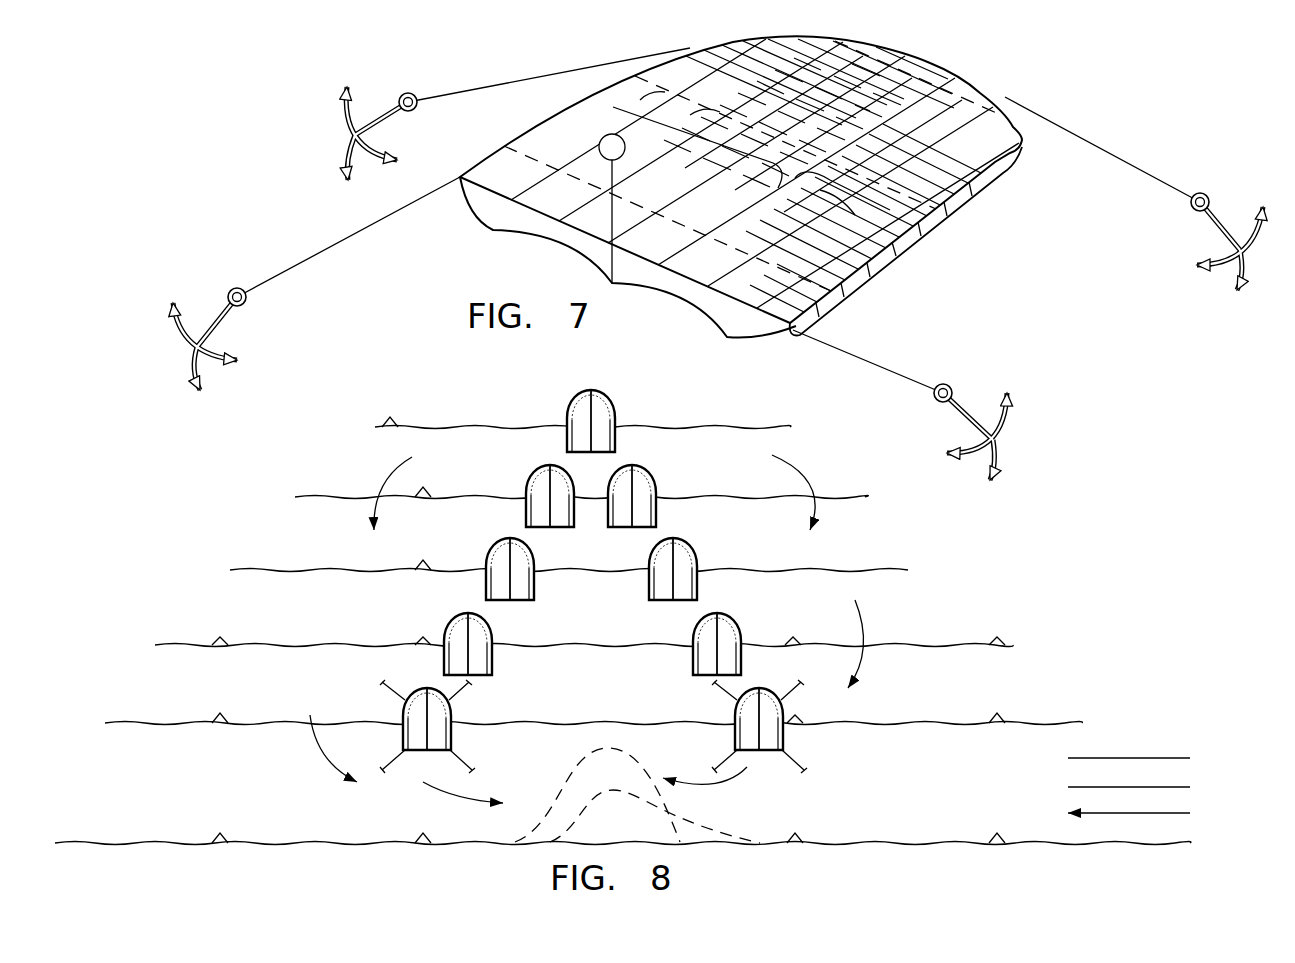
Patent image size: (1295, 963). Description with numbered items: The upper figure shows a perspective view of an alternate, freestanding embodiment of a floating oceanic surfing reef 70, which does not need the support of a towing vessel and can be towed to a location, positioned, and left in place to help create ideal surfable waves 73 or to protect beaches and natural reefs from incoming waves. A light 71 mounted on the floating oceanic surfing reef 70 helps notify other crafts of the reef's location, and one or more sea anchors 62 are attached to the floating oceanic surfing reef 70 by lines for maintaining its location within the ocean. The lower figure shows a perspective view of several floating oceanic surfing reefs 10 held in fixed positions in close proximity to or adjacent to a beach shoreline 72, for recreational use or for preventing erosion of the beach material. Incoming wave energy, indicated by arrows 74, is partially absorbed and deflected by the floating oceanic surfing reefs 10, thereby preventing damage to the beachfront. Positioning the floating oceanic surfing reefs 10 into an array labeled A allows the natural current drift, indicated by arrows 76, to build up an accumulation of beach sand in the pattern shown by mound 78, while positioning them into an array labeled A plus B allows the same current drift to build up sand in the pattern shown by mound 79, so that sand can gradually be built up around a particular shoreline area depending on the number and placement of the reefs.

In FIG. 8, the floating oceanic surfing reef 10 is at (597, 400).
In FIG. 7, the sea anchor 62 is at (173, 305).
In FIG. 7, the floating oceanic surfing reef 70 is at (978, 263).
In FIG. 7, the light 71 is at (612, 134).
In FIG. 8, the beach shoreline 72 is at (133, 838).
In FIG. 7, the surfable wave 73 is at (892, 127).
In FIG. 8, the arrows showing wave energy 74 is at (386, 478).
In FIG. 8, the arrows showing natural current drift 76 is at (1160, 758).
In FIG. 8, the mound 78 is at (587, 820).
In FIG. 8, the mound 79 is at (605, 760).